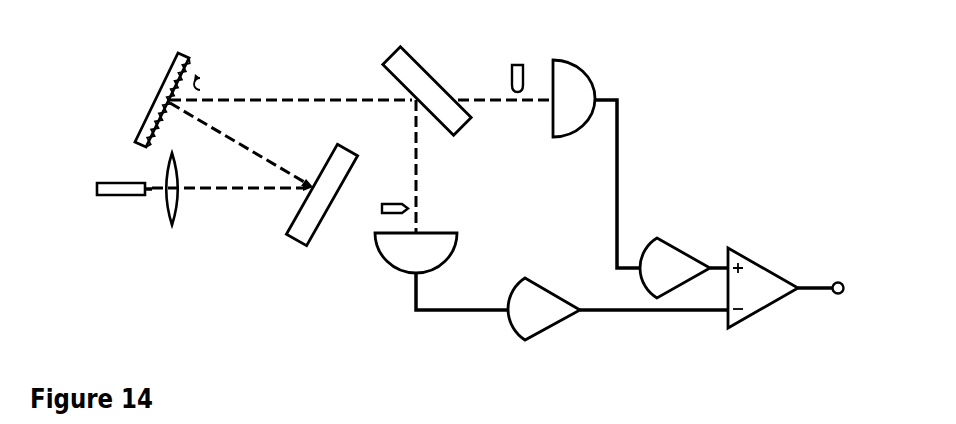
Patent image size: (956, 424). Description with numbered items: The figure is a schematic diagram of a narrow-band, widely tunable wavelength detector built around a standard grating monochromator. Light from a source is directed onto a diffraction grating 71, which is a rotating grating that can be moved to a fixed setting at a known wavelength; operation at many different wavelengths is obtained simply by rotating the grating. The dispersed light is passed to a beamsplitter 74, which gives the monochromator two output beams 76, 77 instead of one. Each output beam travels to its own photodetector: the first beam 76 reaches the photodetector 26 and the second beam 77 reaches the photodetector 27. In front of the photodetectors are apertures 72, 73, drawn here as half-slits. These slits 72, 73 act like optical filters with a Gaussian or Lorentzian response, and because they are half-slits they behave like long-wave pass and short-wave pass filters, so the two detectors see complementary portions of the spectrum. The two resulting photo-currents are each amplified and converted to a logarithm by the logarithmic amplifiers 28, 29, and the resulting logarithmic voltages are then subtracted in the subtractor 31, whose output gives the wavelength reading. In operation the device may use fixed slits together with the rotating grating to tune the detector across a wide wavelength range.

The diffraction grating 71 is at (166, 85).
The beamsplitter 74 is at (413, 70).
The aperture (slit) 72 is at (518, 60).
The photodetector 26 is at (582, 92).
The photodetector 27 is at (438, 255).
The logarithmic amplifier 28 is at (667, 260).
The logarithmic amplifier 29 is at (535, 322).
The subtractor 31 is at (760, 278).
The aperture (slit) 73 is at (380, 210).
The output beam 76 is at (485, 102).
The output beam 77 is at (415, 133).